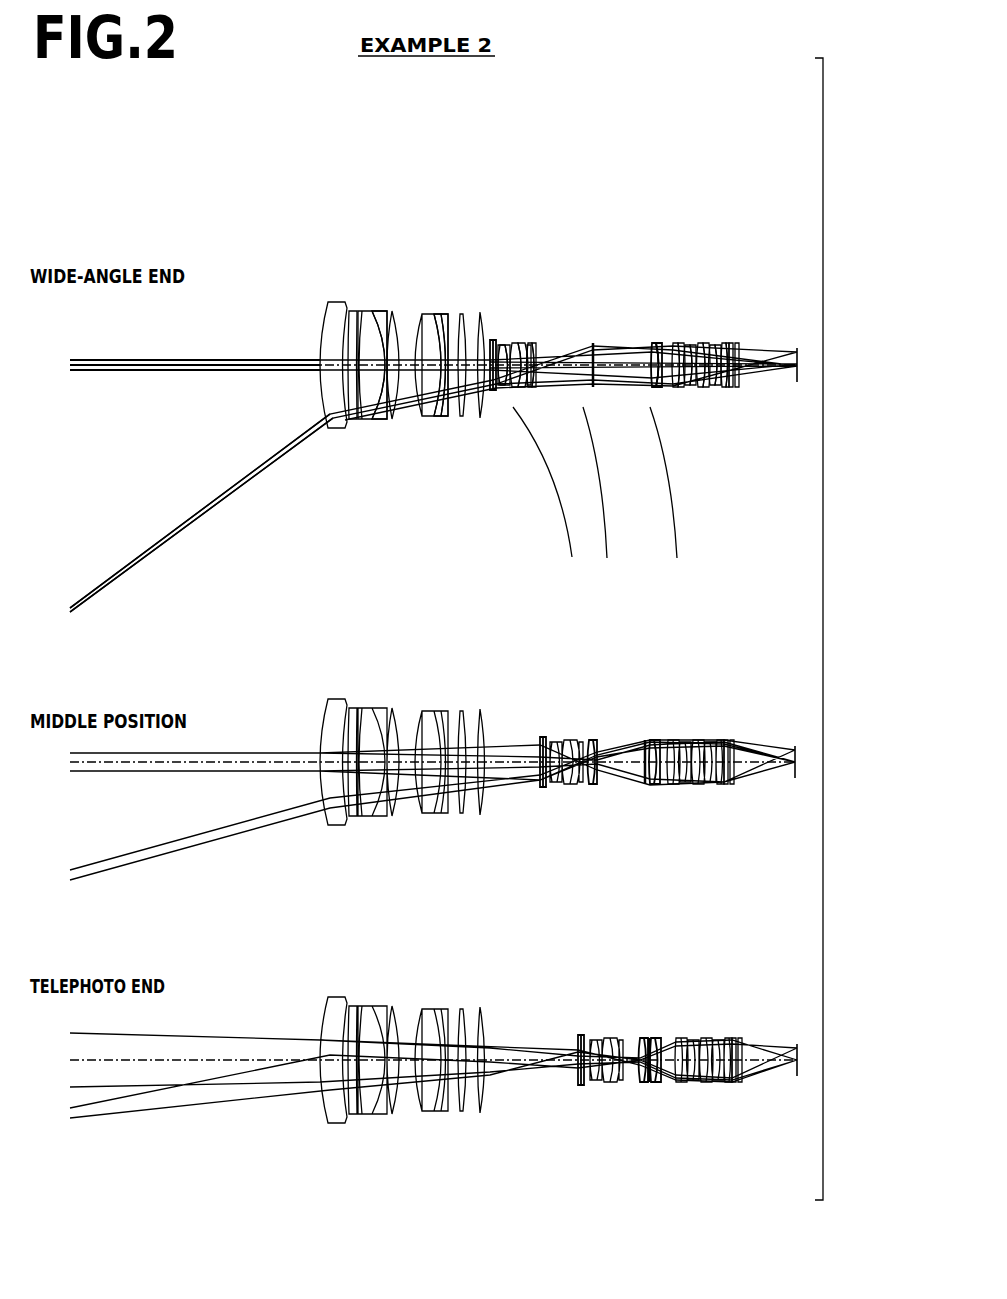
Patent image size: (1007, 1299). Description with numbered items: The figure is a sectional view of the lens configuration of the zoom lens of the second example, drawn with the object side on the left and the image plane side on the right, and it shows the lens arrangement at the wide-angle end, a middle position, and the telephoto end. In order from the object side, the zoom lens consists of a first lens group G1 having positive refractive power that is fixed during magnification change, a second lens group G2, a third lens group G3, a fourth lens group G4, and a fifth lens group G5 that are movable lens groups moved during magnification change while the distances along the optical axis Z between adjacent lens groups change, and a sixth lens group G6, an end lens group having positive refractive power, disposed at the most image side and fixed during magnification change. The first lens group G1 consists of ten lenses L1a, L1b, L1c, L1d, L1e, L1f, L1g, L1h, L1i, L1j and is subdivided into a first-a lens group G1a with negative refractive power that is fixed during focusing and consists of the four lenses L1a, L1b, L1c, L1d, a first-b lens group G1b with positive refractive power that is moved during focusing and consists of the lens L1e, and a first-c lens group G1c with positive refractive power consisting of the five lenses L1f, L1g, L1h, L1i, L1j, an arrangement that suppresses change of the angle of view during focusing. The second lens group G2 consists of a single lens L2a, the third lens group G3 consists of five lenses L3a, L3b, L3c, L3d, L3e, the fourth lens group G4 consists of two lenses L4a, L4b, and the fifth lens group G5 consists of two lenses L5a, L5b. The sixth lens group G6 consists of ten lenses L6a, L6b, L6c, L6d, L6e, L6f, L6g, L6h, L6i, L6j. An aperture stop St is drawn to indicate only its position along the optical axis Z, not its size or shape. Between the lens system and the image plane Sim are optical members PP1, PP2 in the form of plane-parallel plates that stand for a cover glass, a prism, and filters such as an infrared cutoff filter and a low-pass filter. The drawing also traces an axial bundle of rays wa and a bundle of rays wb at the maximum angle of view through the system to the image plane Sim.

The first lens group G1 is at (312, 593).
The first-a lens group G1a is at (266, 330).
The first-b lens group G1b is at (330, 278).
The first-c lens group G1c is at (394, 277).
The lens L1a is at (246, 342).
The lens L1b is at (260, 288).
The lens L1c is at (288, 278).
The lens L1d is at (299, 288).
The lens L1e is at (330, 278).
The lens L1f is at (376, 286).
The lens L1g is at (386, 276).
The lens L1h is at (398, 286).
The lens L1i is at (421, 276).
The lens L1j is at (441, 287).
The second lens group G2 is at (512, 644).
The lens L2a is at (492, 340).
The third lens group G3 is at (468, 712).
The lens L3a is at (413, 450).
The lens L3b is at (429, 440).
The lens L3c is at (449, 449).
The lens L3d is at (467, 439).
The lens L3e is at (480, 450).
The fourth lens group G4 is at (544, 590).
The lens L4a is at (487, 262).
The lens L4b is at (505, 272).
The fifth lens group G5 is at (606, 624).
The lens L5a is at (592, 293).
The lens L5b is at (608, 304).
The sixth lens group G6 is at (690, 590).
The lens L6a is at (624, 262).
The lens L6b is at (639, 272).
The lens L6c is at (654, 261).
The lens L6d is at (667, 271).
The lens L6e is at (683, 262).
The lens L6f is at (705, 272).
The lens L6g is at (729, 261).
The lens L6h is at (743, 271).
The lens L6i is at (756, 262).
The lens L6j is at (770, 272).
The aperture stop St is at (598, 388).
The optical member PP1 is at (731, 390).
The optical member PP2 is at (738, 390).
The image plane Sim is at (797, 383).
The optical axis Z is at (96, 360).
The axial bundle of rays wa is at (66, 356).
The bundle of rays at the maximum angle of view wb is at (66, 598).